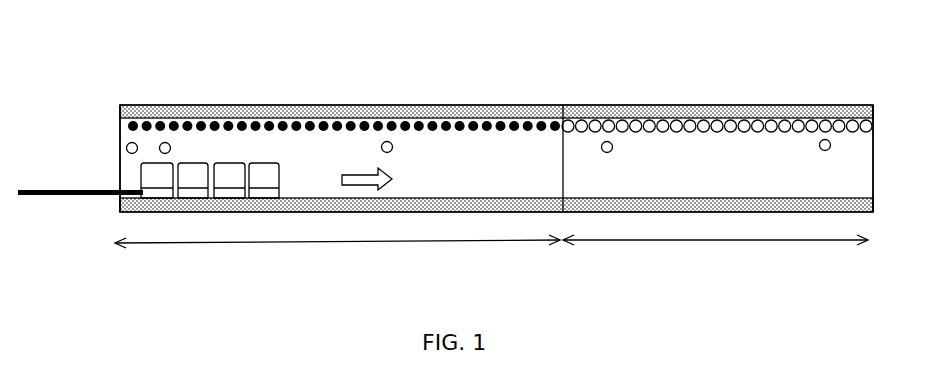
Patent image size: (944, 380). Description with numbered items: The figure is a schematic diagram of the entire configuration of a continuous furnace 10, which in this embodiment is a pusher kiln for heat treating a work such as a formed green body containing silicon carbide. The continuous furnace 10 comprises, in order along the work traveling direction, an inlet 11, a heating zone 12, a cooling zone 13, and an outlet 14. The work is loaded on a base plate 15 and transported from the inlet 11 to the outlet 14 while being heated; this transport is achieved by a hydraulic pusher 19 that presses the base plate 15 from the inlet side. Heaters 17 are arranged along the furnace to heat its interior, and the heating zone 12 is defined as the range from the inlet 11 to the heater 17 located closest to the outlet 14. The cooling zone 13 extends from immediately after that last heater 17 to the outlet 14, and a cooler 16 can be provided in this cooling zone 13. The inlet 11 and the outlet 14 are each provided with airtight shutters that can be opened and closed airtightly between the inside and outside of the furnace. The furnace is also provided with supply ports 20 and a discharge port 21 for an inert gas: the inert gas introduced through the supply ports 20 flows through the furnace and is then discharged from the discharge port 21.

The continuous furnace 10 is at (262, 88).
The inlet 11 is at (120, 172).
The heating zone 12 is at (337, 251).
The cooling zone 13 is at (715, 252).
The outlet 14 is at (872, 170).
The base plate 15 is at (281, 190).
The cooler 16 is at (717, 129).
The heater 17 is at (550, 129).
The hydraulic pusher 19 is at (64, 197).
The supply port 20 is at (171, 148).
The discharge port 21 is at (129, 143).